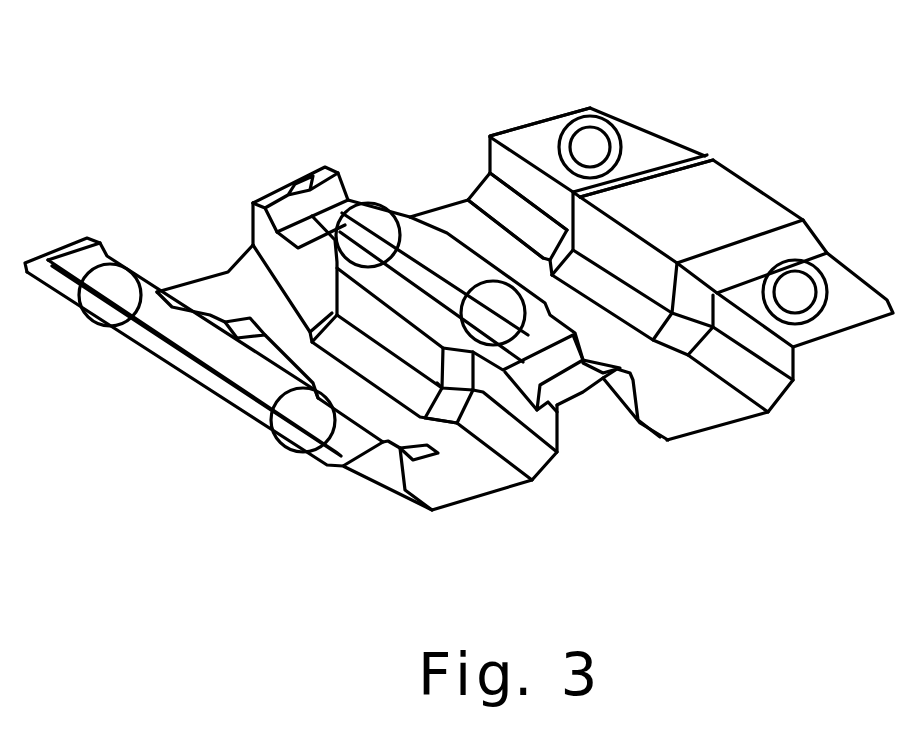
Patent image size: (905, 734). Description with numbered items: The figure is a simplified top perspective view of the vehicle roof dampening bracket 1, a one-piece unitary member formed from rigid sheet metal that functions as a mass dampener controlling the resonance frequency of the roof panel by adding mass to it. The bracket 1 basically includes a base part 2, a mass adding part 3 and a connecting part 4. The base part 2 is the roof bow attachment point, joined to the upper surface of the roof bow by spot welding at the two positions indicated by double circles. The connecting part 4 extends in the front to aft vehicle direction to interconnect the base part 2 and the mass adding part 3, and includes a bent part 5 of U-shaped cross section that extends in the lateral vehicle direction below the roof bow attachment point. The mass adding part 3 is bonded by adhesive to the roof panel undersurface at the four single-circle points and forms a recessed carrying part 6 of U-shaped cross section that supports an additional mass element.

The vehicle roof dampening bracket 1 is at (365, 143).
The base part 2 is at (807, 361).
The mass adding part 3 is at (659, 458).
The connecting part 4 is at (833, 404).
The bent part 5 is at (458, 218).
The carrying part 6 is at (220, 287).